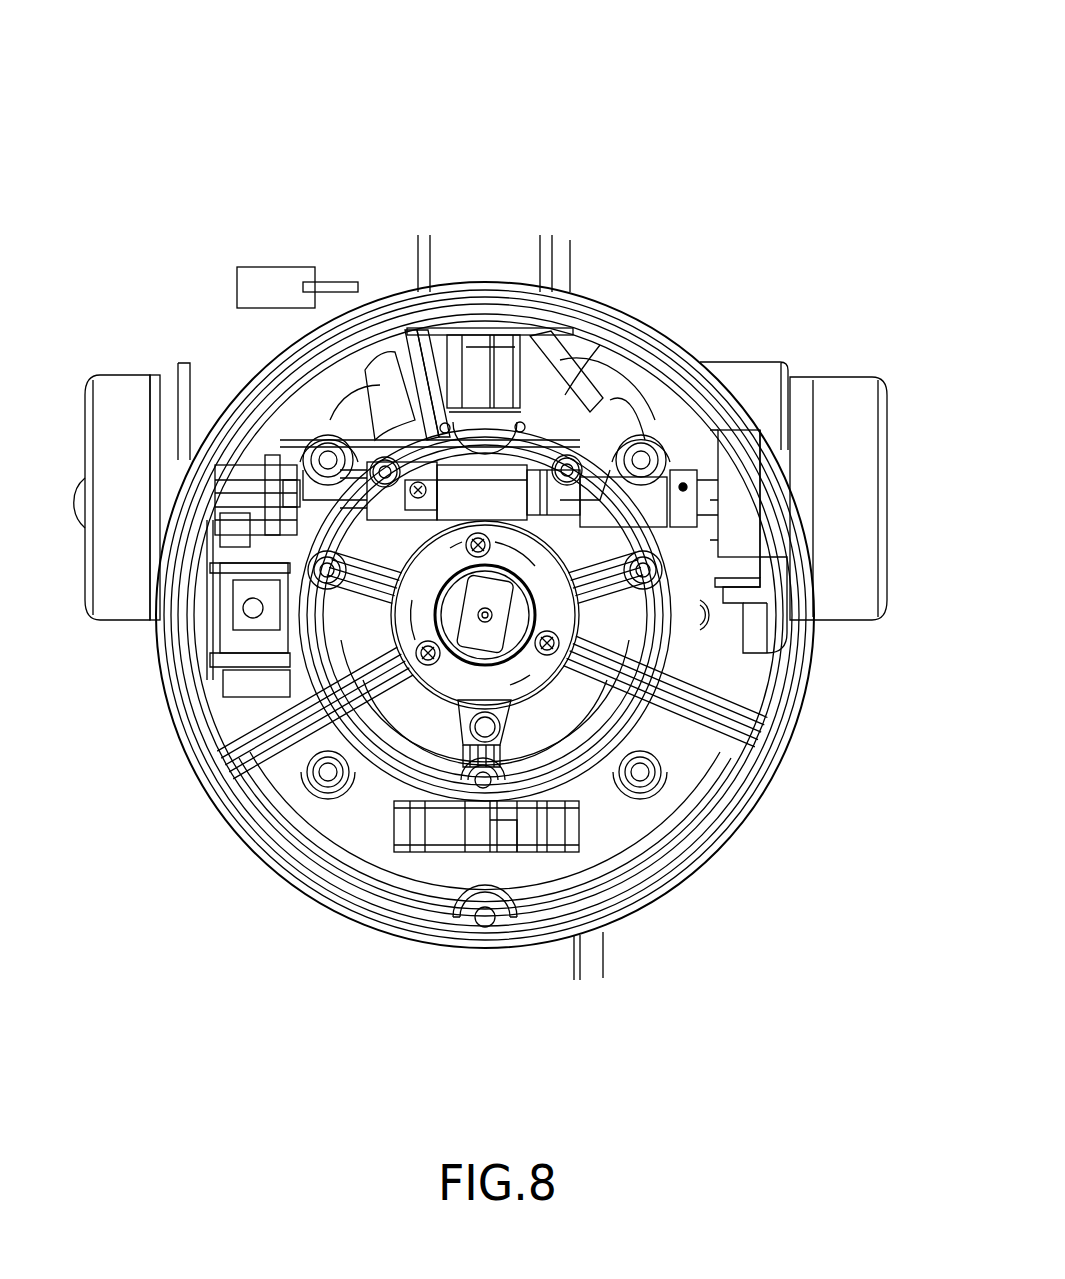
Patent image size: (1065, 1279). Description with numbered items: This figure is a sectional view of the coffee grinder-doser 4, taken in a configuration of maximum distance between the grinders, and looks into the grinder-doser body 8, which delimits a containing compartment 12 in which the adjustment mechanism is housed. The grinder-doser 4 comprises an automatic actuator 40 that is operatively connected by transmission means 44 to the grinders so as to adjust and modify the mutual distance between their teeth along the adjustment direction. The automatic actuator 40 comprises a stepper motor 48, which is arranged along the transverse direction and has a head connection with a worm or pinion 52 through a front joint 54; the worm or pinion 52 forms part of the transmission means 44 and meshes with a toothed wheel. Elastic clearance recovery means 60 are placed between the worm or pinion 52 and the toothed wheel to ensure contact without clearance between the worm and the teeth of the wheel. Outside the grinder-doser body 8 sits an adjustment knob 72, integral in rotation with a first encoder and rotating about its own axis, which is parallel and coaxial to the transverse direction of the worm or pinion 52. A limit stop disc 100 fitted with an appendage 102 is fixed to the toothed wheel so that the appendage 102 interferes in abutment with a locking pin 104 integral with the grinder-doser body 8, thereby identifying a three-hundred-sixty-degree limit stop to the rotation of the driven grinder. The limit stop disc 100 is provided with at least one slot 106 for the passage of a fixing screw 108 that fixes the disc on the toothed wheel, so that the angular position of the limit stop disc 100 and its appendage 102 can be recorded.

The grinder-doser 4 is at (200, 102).
The grinder-doser body 8 is at (645, 335).
The containing compartment 12 is at (331, 380).
The automatic actuator 40 is at (850, 582).
The transmission means 44 is at (537, 305).
The stepper motor 48 is at (845, 582).
The worm or pinion 52 is at (535, 487).
The front joint 54 is at (690, 478).
The elastic clearance recovery means 60 is at (322, 448).
The adjustment knob 72 is at (118, 570).
The limit stop disc 100 is at (270, 782).
The appendage 102 is at (473, 708).
The locking pin 104 is at (518, 674).
The slot 106 is at (645, 445).
The fixing screw 108 is at (352, 800).